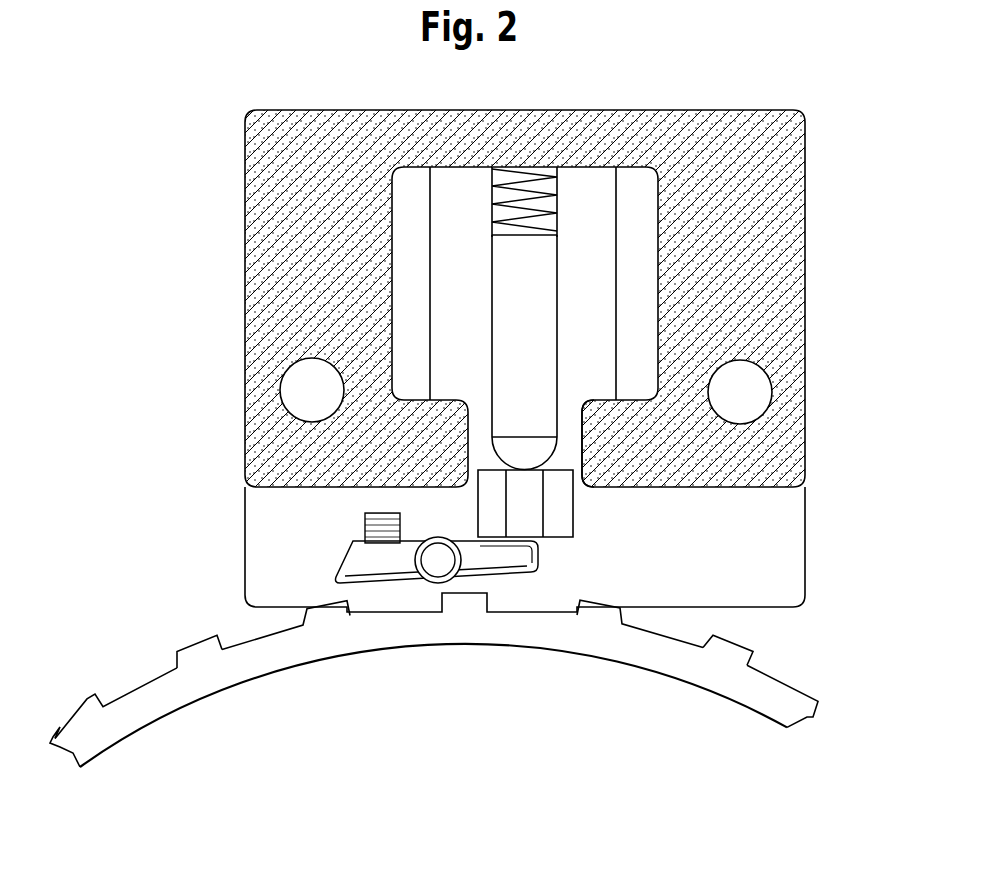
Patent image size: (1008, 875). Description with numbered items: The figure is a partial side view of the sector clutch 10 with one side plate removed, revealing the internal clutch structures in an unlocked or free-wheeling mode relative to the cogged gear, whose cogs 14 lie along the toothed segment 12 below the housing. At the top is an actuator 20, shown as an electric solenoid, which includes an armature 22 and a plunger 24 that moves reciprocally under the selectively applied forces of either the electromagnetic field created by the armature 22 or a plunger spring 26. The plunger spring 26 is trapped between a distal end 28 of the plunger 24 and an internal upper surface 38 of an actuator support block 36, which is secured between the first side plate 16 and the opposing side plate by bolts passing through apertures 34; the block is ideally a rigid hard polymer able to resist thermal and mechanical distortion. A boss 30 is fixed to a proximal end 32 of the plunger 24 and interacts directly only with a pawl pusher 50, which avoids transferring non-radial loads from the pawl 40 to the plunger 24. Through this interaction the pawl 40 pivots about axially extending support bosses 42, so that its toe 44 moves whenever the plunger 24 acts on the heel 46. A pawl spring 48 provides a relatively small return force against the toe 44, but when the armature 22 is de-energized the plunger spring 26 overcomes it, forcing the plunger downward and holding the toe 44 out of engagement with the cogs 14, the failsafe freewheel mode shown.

The sector clutch 10 is at (808, 90).
The toothed segment 12 is at (795, 670).
The cogs 14 is at (201, 650).
The first side plate 16 is at (262, 517).
The actuator 20 is at (632, 260).
The armature 22 is at (593, 343).
The plunger 24 is at (582, 413).
The plunger spring 26 is at (522, 170).
The distal end 28 is at (555, 232).
The boss 30 is at (503, 450).
The proximal end 32 is at (503, 420).
The apertures 34 is at (300, 402).
The actuator support block 36 is at (258, 232).
The internal upper surface 38 is at (492, 188).
The pawl 40 is at (408, 628).
The support bosses 42 is at (440, 562).
The toe 44 is at (345, 548).
The heel 46 is at (520, 555).
The pawl spring 48 is at (400, 532).
The pawl pusher 50 is at (590, 526).